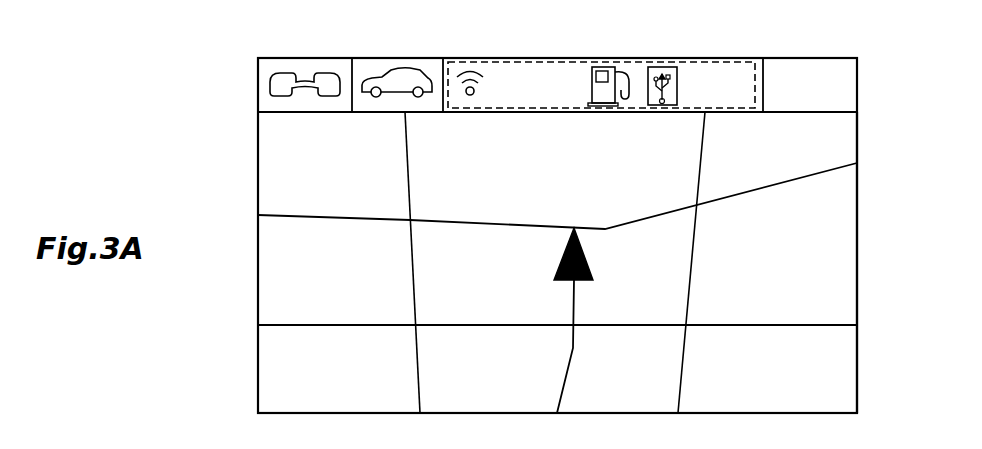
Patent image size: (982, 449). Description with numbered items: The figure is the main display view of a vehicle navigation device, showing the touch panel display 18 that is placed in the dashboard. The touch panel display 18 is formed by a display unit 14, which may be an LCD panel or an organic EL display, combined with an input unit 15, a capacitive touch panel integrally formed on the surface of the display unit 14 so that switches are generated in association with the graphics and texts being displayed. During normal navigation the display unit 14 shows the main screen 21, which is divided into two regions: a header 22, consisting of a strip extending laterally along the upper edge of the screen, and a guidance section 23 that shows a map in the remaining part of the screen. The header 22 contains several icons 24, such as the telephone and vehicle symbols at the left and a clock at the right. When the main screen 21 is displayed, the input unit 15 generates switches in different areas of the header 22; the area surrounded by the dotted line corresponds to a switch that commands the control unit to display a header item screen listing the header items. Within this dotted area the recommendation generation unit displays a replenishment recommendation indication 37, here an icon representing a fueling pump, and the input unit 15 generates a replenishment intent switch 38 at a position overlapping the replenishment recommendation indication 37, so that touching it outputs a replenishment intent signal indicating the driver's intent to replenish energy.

The touch panel display 18 is at (250, 134).
The header 22 is at (365, 62).
The icons 24 is at (470, 72).
The replenishment recommendation indication 37 is at (597, 66).
The replenishment intent switch 38 is at (683, 62).
The display unit 14 is at (268, 198).
The input unit 15 is at (268, 250).
The main screen 21 is at (284, 352).
The guidance section 23 is at (833, 238).